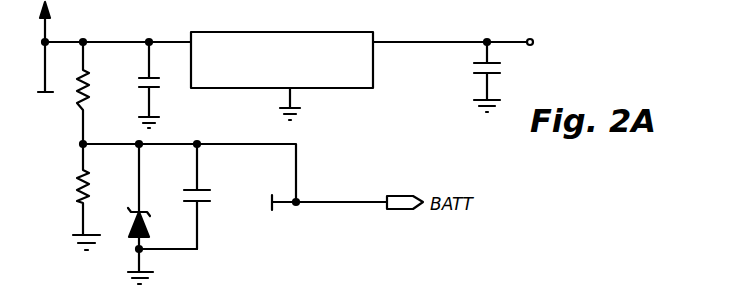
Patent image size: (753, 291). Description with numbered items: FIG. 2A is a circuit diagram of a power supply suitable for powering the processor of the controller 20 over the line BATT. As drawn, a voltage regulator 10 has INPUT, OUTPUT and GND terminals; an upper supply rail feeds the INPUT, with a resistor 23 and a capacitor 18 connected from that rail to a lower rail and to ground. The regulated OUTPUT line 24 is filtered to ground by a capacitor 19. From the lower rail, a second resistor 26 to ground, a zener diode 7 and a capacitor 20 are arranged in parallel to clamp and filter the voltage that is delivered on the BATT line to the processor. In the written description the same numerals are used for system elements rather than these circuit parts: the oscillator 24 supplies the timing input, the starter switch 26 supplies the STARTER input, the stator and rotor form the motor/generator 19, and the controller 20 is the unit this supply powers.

The resistor R23 23 is at (95, 93).
The capacitor C18 18 is at (161, 85).
The voltage regulator U10 10 is at (282, 66).
The oscillator 24 is at (447, 36).
The motor/generator 19 is at (509, 77).
The starter switch 26 is at (65, 197).
The zener diode D7 7 is at (162, 214).
The controller 20 is at (216, 196).